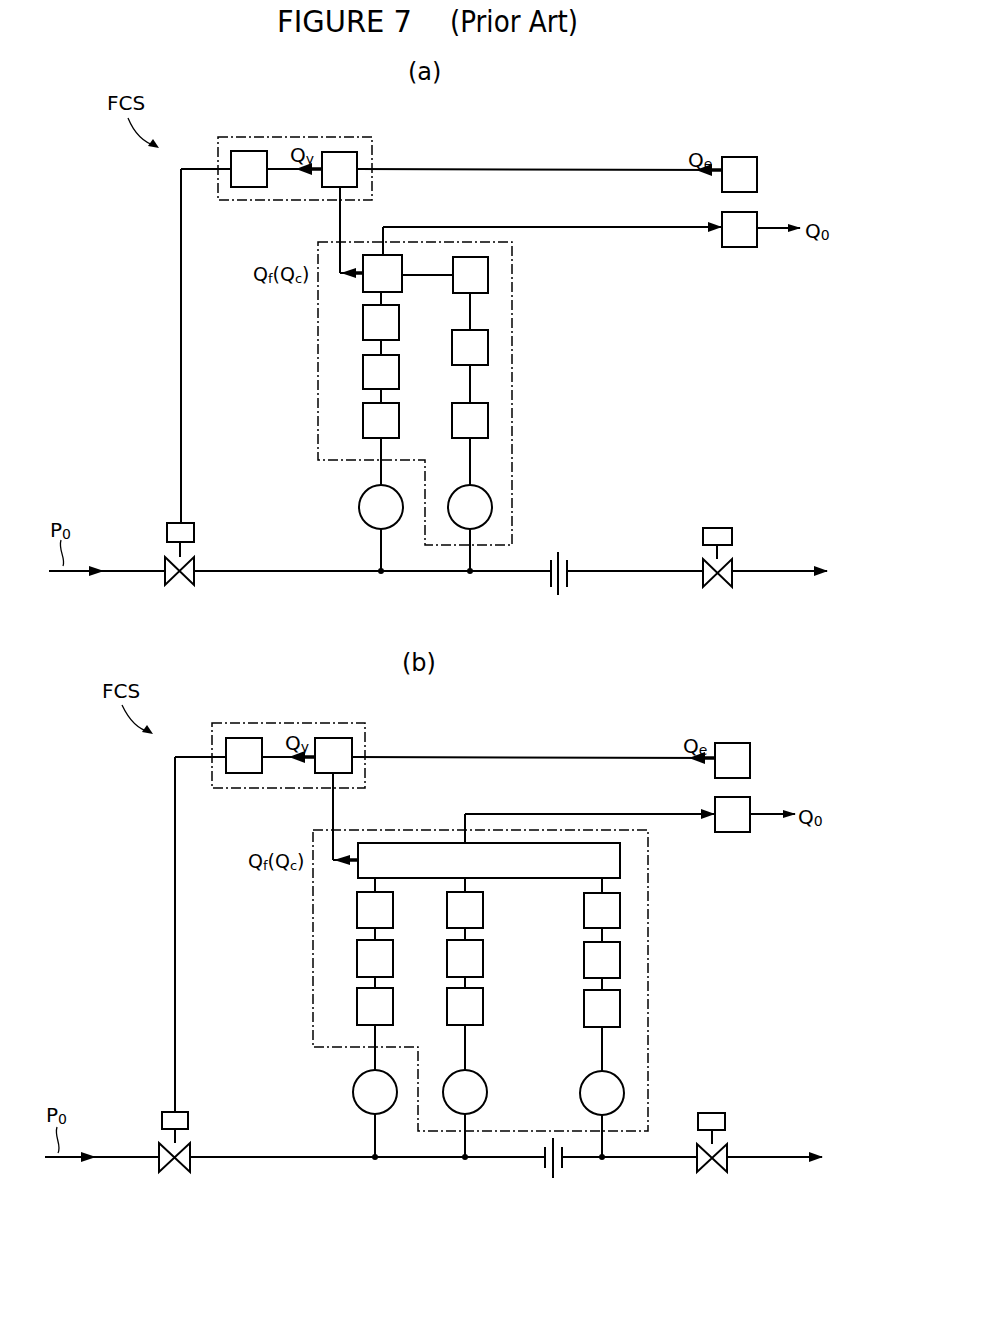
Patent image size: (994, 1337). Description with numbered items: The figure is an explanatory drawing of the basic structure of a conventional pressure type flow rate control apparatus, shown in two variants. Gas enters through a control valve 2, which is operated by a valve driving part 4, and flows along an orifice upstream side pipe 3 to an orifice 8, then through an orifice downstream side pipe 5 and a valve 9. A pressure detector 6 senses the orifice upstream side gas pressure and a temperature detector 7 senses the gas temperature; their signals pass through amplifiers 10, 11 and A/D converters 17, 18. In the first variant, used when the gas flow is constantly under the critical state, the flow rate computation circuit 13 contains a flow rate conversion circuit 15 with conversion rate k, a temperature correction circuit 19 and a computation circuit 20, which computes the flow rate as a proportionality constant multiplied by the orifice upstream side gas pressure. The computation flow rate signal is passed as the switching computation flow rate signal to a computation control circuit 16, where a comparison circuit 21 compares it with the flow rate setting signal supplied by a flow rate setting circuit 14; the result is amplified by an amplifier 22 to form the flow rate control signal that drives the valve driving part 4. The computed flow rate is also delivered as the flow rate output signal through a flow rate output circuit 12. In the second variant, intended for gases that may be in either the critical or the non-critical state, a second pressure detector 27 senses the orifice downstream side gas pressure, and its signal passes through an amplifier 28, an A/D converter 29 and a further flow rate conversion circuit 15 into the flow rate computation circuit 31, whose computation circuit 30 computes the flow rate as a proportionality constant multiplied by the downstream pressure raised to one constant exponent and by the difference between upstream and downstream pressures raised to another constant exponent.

The control valve 2 is at (183, 585).
The orifice upstream side pipe 3 is at (288, 572).
The valve driving part 4 is at (166, 532).
The orifice downstream side pipe 5 is at (636, 574).
The pressure detector 6 is at (359, 507).
The temperature detector 7 is at (492, 507).
The orifice 8 is at (553, 590).
The valve 9 is at (720, 588).
The amplifier 10 is at (363, 423).
The amplifier 11 is at (488, 418).
The flow rate output circuit 12 is at (738, 247).
The flow rate computation circuit 13 is at (512, 455).
The flow rate setting circuit 14 is at (738, 157).
The flow rate conversion circuit 15 is at (363, 374).
The computation control circuit 16 is at (287, 137).
The A/D converter 17 is at (363, 324).
The A/D converter 18 is at (488, 347).
The temperature correction circuit 19 is at (488, 275).
The computation circuit 20 is at (390, 255).
The comparison circuit 21 is at (340, 152).
The amplifier 22 is at (249, 151).
The pressure detector 27 is at (624, 1091).
The amplifier 28 is at (620, 1006).
The A/D converter 29 is at (620, 906).
The computation circuit 30 is at (620, 860).
The flow rate computation circuit 31 is at (648, 1047).